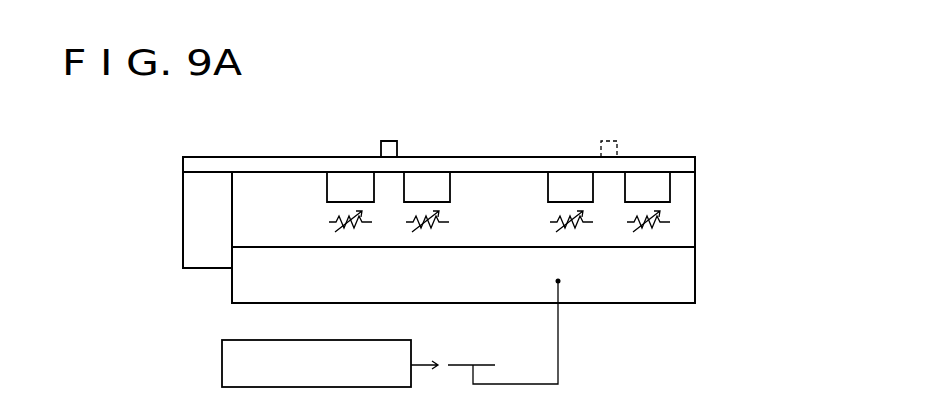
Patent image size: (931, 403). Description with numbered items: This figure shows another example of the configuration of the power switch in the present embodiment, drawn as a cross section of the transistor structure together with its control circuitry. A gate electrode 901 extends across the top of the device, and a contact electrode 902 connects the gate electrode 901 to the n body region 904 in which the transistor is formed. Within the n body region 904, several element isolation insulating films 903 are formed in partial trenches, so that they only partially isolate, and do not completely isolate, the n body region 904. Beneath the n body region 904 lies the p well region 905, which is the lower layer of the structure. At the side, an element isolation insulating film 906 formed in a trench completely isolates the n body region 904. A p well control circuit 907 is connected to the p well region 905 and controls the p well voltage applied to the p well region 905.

The gate electrode 901 is at (215, 168).
The contact electrode 902 is at (390, 147).
The element isolation insulating film 903 is at (350, 188).
The n body region 904 is at (688, 215).
The p well region 905 is at (688, 278).
The element isolation insulating film 906 is at (203, 262).
The VPW control circuit 907 is at (222, 366).